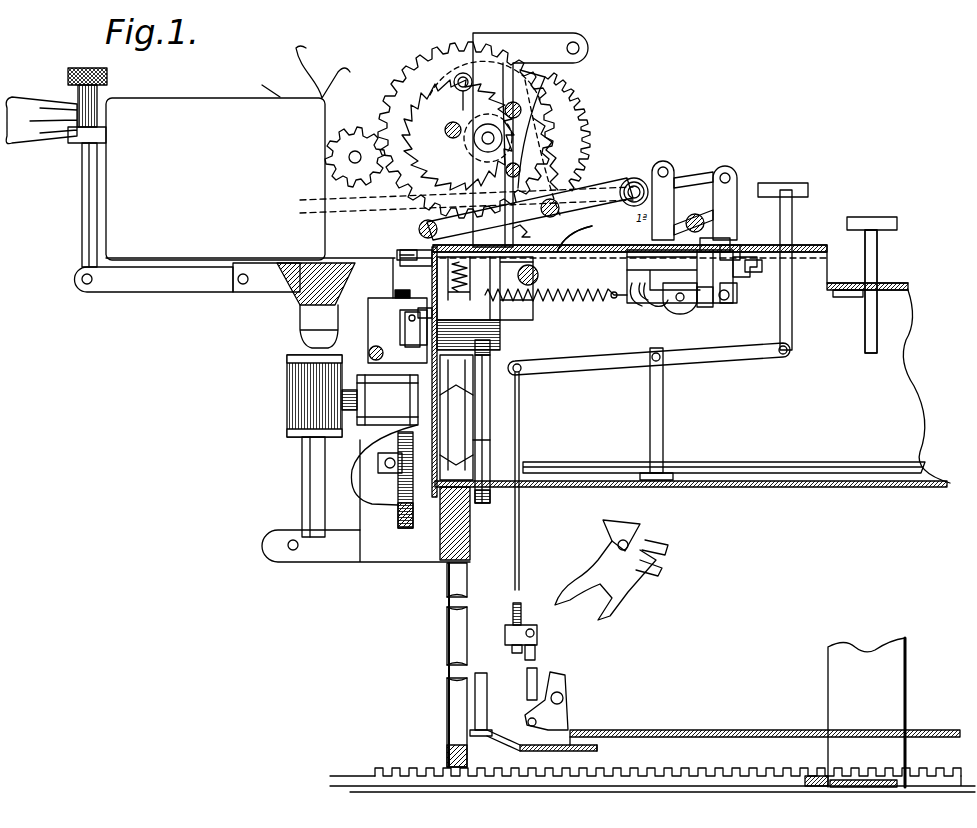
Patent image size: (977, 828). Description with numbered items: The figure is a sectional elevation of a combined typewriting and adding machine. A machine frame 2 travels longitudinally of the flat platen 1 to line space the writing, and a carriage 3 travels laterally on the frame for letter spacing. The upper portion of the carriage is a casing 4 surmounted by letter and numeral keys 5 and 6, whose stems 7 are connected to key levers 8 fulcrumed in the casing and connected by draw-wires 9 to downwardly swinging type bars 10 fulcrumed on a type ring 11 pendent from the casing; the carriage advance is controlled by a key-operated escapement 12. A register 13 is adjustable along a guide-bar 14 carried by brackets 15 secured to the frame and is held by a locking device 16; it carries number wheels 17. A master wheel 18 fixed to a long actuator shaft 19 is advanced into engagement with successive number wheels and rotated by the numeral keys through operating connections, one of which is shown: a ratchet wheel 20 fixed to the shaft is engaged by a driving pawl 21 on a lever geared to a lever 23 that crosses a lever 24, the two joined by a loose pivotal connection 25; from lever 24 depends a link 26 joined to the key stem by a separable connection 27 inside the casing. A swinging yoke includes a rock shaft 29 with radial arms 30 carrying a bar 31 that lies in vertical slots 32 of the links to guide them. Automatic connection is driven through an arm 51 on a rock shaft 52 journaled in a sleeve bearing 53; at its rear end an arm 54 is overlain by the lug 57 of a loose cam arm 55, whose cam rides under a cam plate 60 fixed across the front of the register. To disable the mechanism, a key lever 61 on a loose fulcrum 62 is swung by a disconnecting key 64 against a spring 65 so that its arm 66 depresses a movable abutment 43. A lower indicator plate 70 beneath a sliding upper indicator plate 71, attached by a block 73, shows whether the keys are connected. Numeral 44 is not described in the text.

The flat platen 1 is at (346, 780).
The machine frame 2 is at (447, 650).
The carriage 3 is at (752, 488).
The casing 4 is at (724, 414).
The letter keys 5 is at (872, 275).
The numeral keys 6 is at (803, 175).
The key stems 7 is at (792, 318).
The key levers 8 is at (717, 358).
The draw-wires 9 is at (520, 535).
The type bars 10 is at (632, 572).
The type ring 11 is at (624, 733).
The escapement 12 is at (490, 440).
The register 13 is at (215, 179).
The guide-bar 14 is at (290, 290).
The brackets 15 is at (380, 556).
The locking device 16 is at (178, 282).
The number wheels 17 is at (355, 157).
The master wheel 18 is at (425, 66).
The actuator shaft 19 is at (487, 146).
The ratchet wheel 20 is at (516, 140).
The driving pawl 21 is at (462, 72).
The lever 23 is at (586, 136).
The lever 24 is at (604, 196).
The loose pivotal connection 25 is at (633, 178).
The link 26 is at (731, 171).
The separable connection 27 is at (763, 266).
The rock shaft 29 is at (682, 303).
The radial arms 30 is at (705, 308).
The bar 31 is at (729, 304).
The vertical slots 32 is at (742, 276).
The movable abutment 43 is at (667, 306).
The ratchet wheel 44 is at (458, 135).
The arm 51 is at (501, 318).
The rock shaft 52 is at (456, 417).
The sleeve bearing 53 is at (490, 372).
The arm 54 is at (404, 322).
The loose cam arm 55 is at (425, 326).
The lug 57 is at (432, 312).
The cam plate 60 is at (410, 285).
The key lever 61 is at (552, 238).
The fulcrum 62 is at (655, 291).
The disconnecting key 64 is at (663, 162).
The spring 65 is at (545, 300).
The arm 66 is at (577, 239).
The lower indicator plate 70 is at (726, 240).
The upper indicator plate 71 is at (704, 227).
The block 73 is at (733, 250).